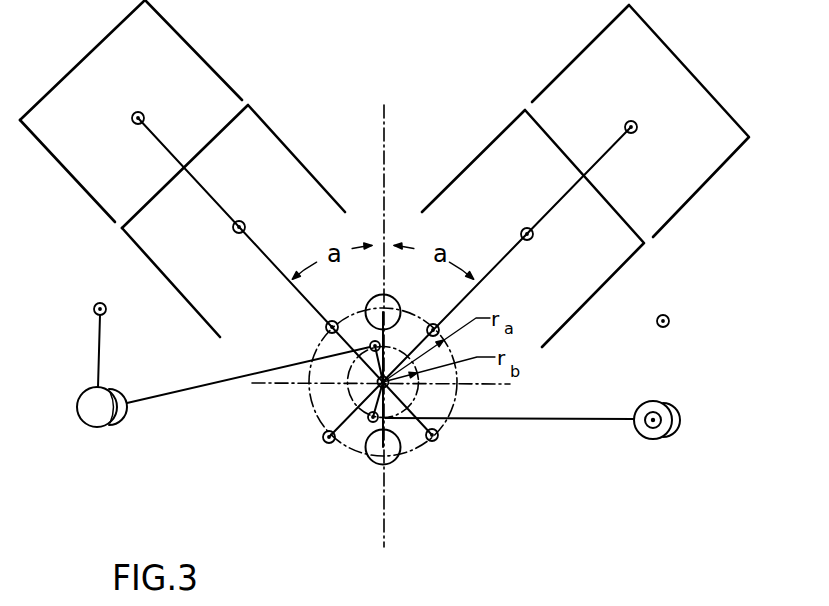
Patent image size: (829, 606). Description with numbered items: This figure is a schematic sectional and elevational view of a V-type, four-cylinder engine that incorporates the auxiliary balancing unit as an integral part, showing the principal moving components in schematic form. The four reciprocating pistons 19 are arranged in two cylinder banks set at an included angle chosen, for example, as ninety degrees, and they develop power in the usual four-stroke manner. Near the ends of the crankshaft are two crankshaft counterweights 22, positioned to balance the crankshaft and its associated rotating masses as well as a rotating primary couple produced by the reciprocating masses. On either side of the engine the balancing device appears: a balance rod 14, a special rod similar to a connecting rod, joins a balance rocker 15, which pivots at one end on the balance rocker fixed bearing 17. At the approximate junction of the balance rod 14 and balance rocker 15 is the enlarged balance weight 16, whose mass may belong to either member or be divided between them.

The balance rod 14 is at (196, 388).
The balance rocker 15 is at (96, 347).
The balance weight 16 is at (657, 440).
The balance rocker fixed bearing 17 is at (99, 303).
The reciprocating pistons 19 is at (224, 74).
The crankshaft counterweights 22 is at (397, 300).